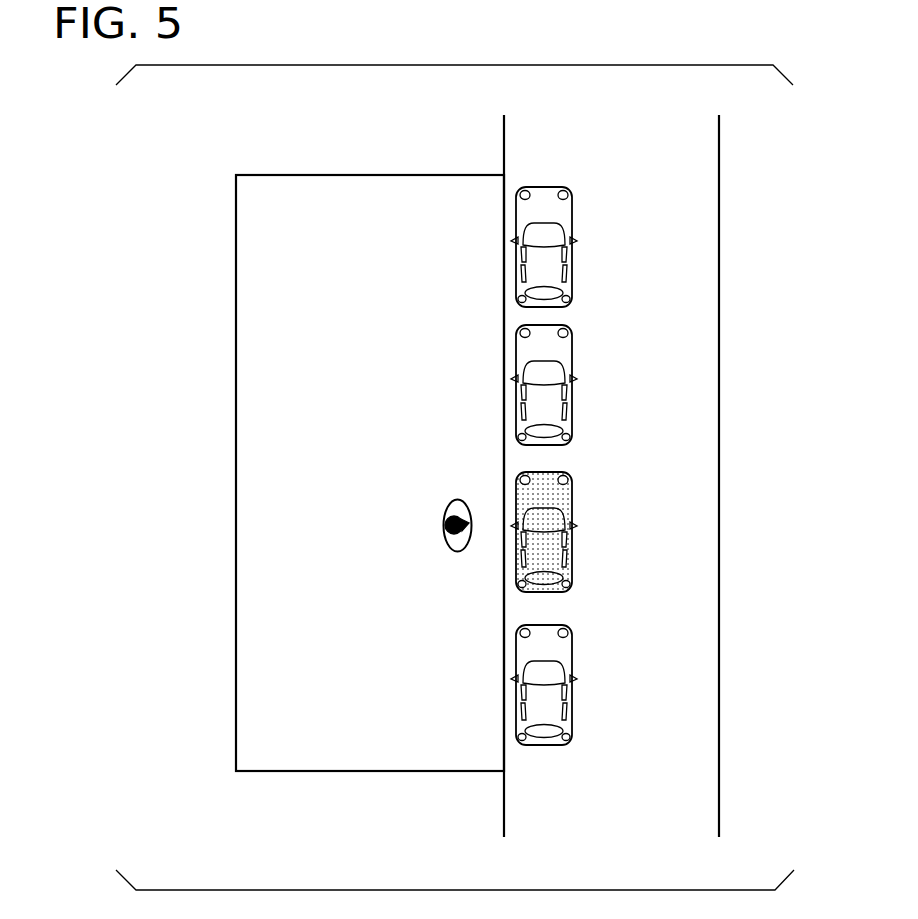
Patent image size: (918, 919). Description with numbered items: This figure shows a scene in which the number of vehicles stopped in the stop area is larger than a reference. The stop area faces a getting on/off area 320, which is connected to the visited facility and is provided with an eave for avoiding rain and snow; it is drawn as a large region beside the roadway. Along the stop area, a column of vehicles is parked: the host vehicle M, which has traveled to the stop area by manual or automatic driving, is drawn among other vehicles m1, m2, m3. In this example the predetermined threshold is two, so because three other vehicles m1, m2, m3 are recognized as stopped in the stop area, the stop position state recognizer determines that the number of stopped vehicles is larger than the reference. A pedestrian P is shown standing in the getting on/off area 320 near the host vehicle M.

The getting on/off area 320 is at (236, 472).
The pedestrian P is at (443, 525).
The other vehicle m1 is at (574, 249).
The other vehicle m2 is at (574, 389).
The host vehicle M is at (575, 533).
The other vehicle m3 is at (574, 689).